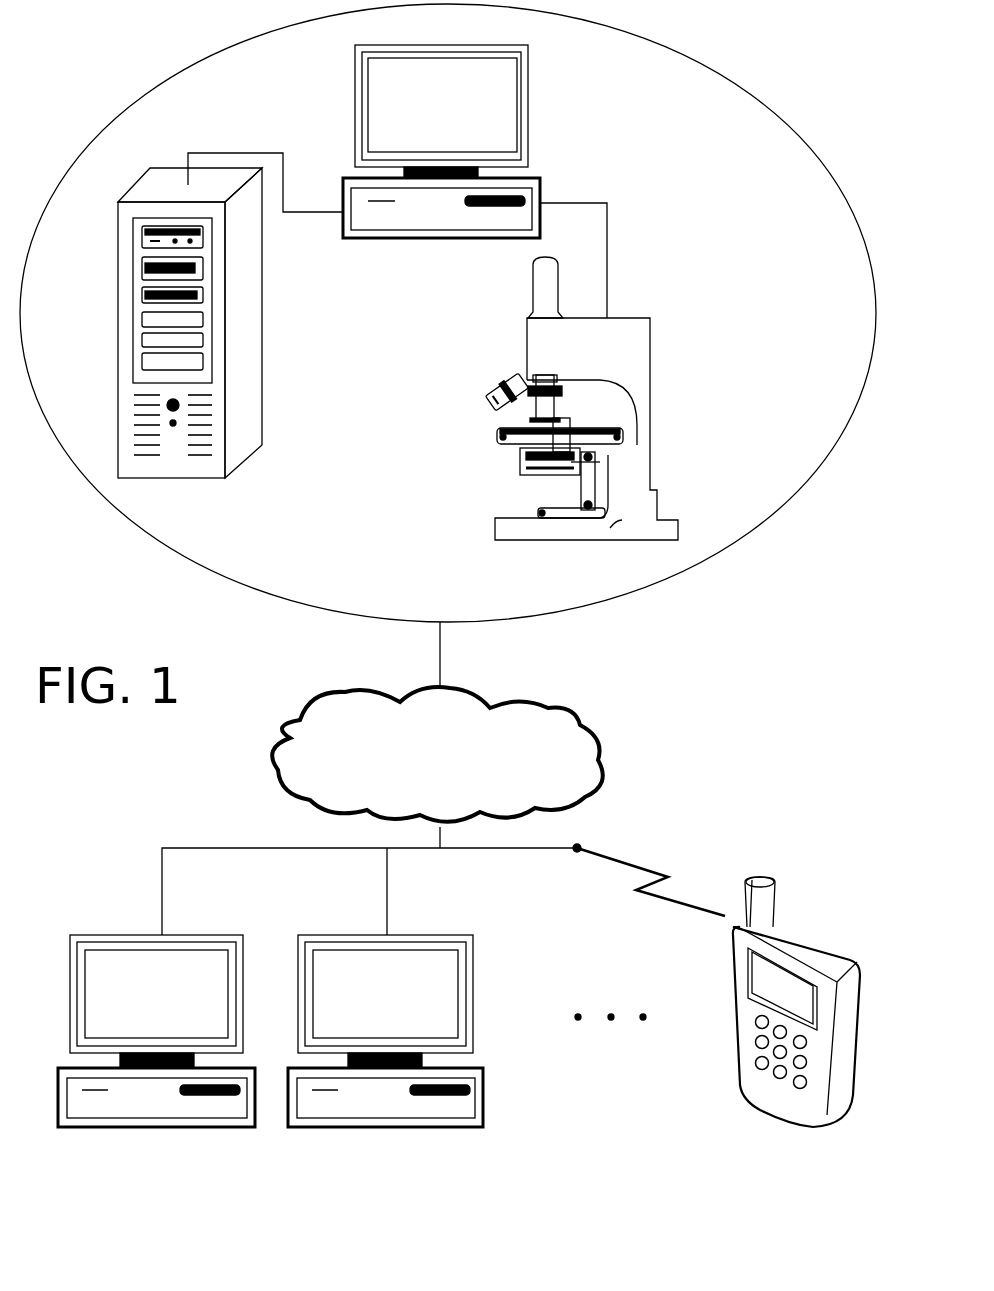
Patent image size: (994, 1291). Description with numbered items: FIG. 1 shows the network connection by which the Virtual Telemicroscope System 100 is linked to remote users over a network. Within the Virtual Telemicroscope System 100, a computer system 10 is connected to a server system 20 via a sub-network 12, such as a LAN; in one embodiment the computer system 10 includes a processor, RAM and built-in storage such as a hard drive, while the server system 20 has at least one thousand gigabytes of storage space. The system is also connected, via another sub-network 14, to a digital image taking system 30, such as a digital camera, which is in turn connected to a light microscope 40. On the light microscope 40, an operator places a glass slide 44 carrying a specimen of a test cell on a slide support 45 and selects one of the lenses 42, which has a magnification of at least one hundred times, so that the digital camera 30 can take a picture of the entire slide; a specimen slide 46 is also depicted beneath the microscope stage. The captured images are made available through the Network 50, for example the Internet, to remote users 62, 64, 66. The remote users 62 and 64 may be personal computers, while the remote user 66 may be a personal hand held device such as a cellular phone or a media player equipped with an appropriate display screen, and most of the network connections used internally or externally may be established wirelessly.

The Virtual Telemicroscope System 100 is at (245, 22).
The computer system 10 is at (528, 105).
The sub-network 12 is at (307, 212).
The sub-network 14 is at (612, 248).
The server system 20 is at (262, 380).
The digital image taking system 30 is at (532, 289).
The light microscope 40 is at (650, 368).
The lenses 42 is at (492, 395).
The glass slide 44 is at (500, 428).
The slide support 45 is at (498, 440).
The specimen slide 46 is at (540, 510).
The Network 50 is at (607, 733).
The remote user 62 is at (198, 930).
The remote user 64 is at (433, 930).
The remote user 66 is at (805, 925).